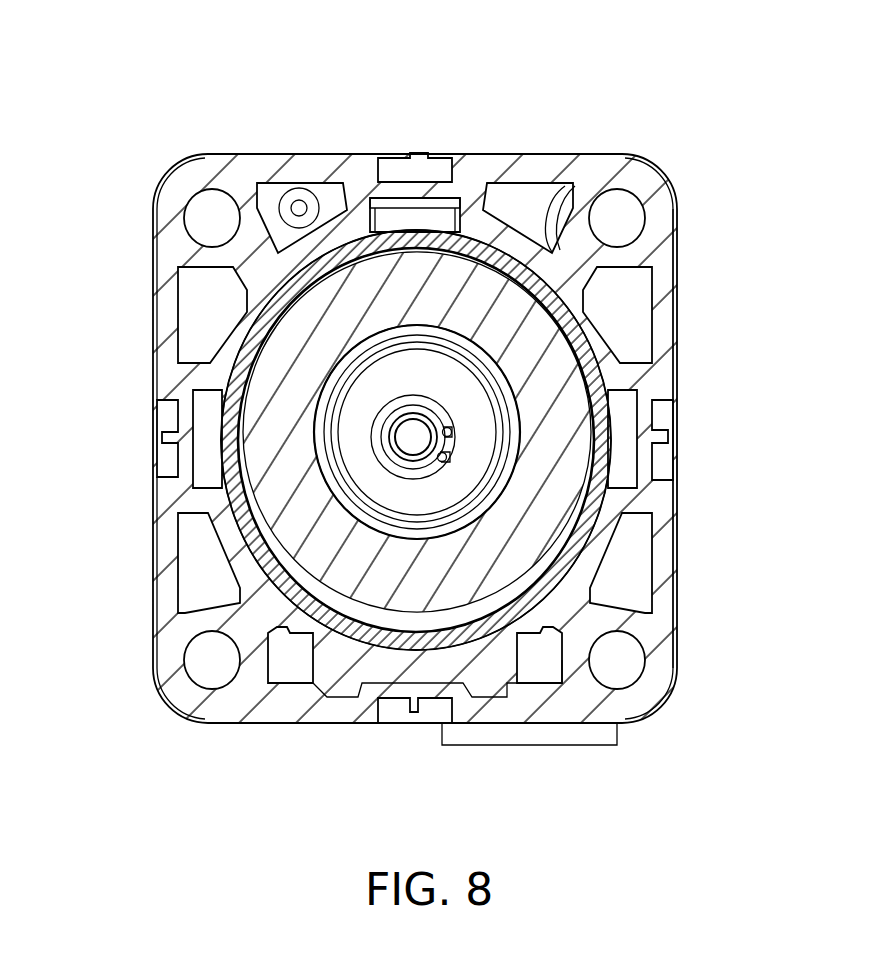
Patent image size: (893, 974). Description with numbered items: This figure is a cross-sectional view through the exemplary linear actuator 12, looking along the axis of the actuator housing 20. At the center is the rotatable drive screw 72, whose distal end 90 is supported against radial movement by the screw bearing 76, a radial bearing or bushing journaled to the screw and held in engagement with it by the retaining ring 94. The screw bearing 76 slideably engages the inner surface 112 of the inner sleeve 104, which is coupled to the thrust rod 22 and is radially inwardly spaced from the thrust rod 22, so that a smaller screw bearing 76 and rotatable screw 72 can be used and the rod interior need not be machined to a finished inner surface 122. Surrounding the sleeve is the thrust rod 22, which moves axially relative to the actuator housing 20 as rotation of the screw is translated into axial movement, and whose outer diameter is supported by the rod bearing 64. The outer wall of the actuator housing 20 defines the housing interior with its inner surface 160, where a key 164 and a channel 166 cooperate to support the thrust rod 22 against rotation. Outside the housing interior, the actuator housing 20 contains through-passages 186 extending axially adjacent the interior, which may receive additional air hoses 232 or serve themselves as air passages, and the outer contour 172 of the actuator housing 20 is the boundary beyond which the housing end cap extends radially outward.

The linear actuator 12 is at (96, 97).
The actuator housing 20 is at (665, 200).
The thrust rod 22 is at (452, 650).
The bearing 64 is at (453, 597).
The rotatable drive screw 72 is at (411, 438).
The screw bearing 76 is at (388, 492).
The distal end 90 is at (470, 430).
The retaining ring 94 is at (440, 462).
The inner sleeve 104 is at (332, 433).
The inner surface 112 is at (338, 463).
The finished inner surface 122 is at (507, 463).
The inner surface 160 is at (505, 628).
The key 164 is at (402, 220).
The channel 166 is at (430, 203).
The outer contour 172 is at (680, 265).
The through-passages 186 is at (555, 182).
The additional air hoses 232 is at (296, 188).